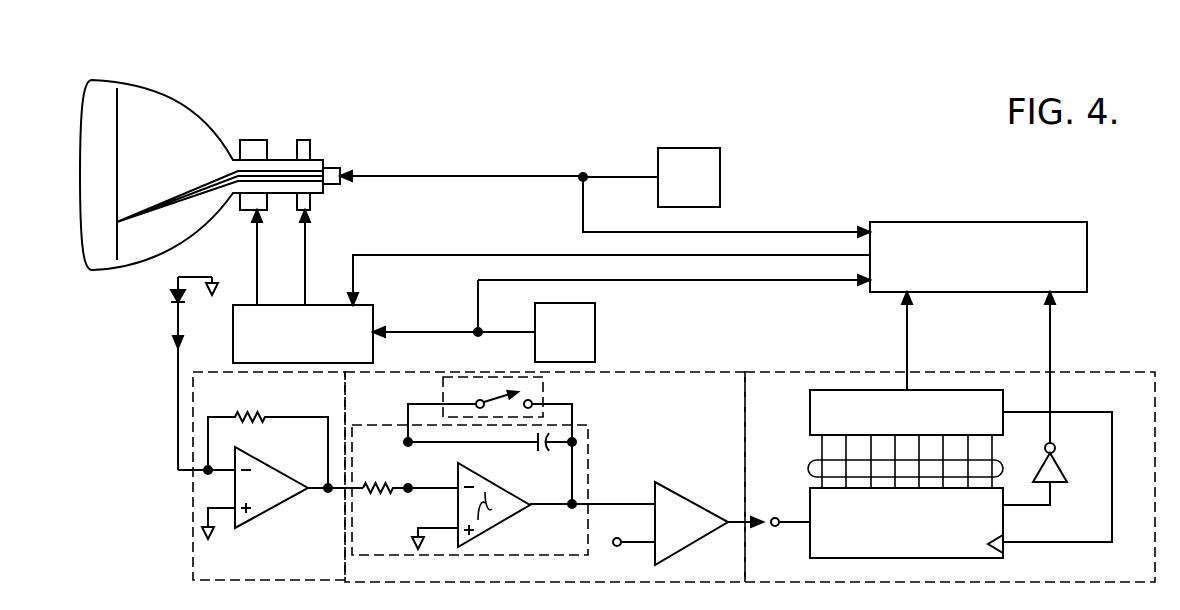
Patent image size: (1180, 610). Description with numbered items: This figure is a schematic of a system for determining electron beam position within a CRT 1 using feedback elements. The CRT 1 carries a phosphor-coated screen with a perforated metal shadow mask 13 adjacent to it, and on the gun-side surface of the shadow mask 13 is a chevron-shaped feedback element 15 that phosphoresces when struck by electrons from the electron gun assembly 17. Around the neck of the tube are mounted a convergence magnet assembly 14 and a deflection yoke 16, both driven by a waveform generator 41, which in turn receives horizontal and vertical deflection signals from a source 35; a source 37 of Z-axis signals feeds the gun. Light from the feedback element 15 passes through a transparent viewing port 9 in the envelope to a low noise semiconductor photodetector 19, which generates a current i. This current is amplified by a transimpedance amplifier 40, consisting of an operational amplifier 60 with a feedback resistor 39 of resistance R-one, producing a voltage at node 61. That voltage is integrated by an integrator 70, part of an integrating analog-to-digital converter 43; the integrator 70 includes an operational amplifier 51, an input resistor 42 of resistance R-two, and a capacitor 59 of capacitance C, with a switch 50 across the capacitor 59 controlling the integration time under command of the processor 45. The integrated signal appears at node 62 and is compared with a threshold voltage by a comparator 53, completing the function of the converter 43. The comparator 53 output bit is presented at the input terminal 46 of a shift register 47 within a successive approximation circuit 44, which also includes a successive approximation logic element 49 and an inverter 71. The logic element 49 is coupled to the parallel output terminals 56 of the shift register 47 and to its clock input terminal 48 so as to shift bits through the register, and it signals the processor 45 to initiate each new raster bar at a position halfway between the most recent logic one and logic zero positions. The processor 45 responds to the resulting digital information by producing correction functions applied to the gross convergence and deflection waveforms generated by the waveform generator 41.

The CRT 1 is at (97, 82).
The shadow mask 13 is at (117, 105).
The feedback element 15 is at (117, 223).
The viewing port 9 is at (160, 250).
The convergence magnet assembly 14 is at (249, 140).
The deflection yoke 16 is at (302, 140).
The electron gun assembly 17 is at (338, 168).
The photodetector 19 is at (173, 303).
The source of Z-axis signals 37 is at (706, 148).
The waveform generator 41 is at (366, 305).
The source of horizontal and vertical deflection signals 35 is at (597, 304).
The processor 45 is at (1078, 222).
The transimpedance amplifier 40 is at (193, 513).
The integrating analog-to-digital converter 43 is at (660, 372).
The successive approximation circuit 44 is at (1105, 372).
The feedback resistor 39 is at (258, 417).
The operational amplifier 60 is at (252, 459).
The node 61 is at (328, 492).
The input resistor 42 is at (368, 488).
The operational amplifier 51 is at (458, 470).
The capacitor 59 is at (538, 449).
The switch 50 is at (543, 393).
The integrator 70 is at (378, 555).
The node 62 is at (572, 508).
The comparator 53 is at (665, 492).
The input terminal 46 is at (777, 519).
The successive approximation logic element 49 is at (810, 396).
The parallel output terminals 56 is at (808, 467).
The shift register 47 is at (1000, 558).
The clock input terminal 48 is at (1008, 543).
The inverter 71 is at (1068, 464).